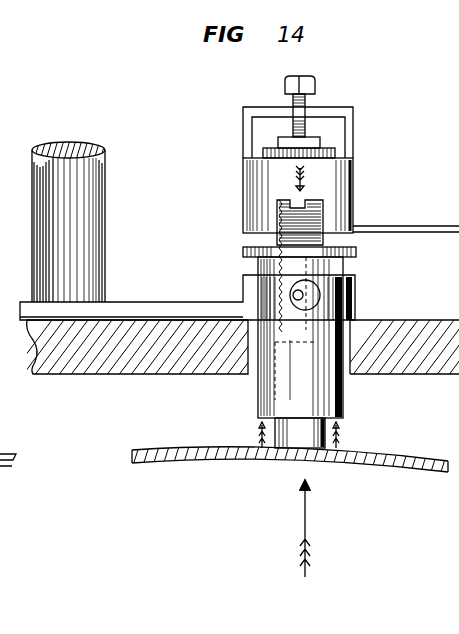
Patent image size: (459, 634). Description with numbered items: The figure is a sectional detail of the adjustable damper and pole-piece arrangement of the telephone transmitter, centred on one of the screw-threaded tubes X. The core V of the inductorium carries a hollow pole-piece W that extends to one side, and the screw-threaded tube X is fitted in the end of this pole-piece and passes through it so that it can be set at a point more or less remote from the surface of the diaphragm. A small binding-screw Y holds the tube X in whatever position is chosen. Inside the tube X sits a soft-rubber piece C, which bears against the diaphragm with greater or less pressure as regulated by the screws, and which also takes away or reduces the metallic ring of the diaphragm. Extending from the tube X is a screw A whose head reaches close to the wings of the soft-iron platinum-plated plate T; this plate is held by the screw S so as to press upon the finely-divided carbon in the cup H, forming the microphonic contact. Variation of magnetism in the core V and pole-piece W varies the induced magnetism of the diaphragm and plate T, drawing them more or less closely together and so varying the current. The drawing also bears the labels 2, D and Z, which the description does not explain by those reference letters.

The screw S is at (315, 90).
The soft-iron platinum-plated plate T is at (318, 150).
The cup H is at (353, 188).
The flange plate 2 is at (326, 243).
The screw-threaded tube X is at (258, 264).
The binding-screw Y is at (305, 295).
The pole-piece W is at (153, 312).
The core V is at (76, 221).
The deck D is at (406, 390).
The soft-rubber piece C is at (299, 433).
The screw A is at (291, 463).
The fragment Z is at (8, 463).